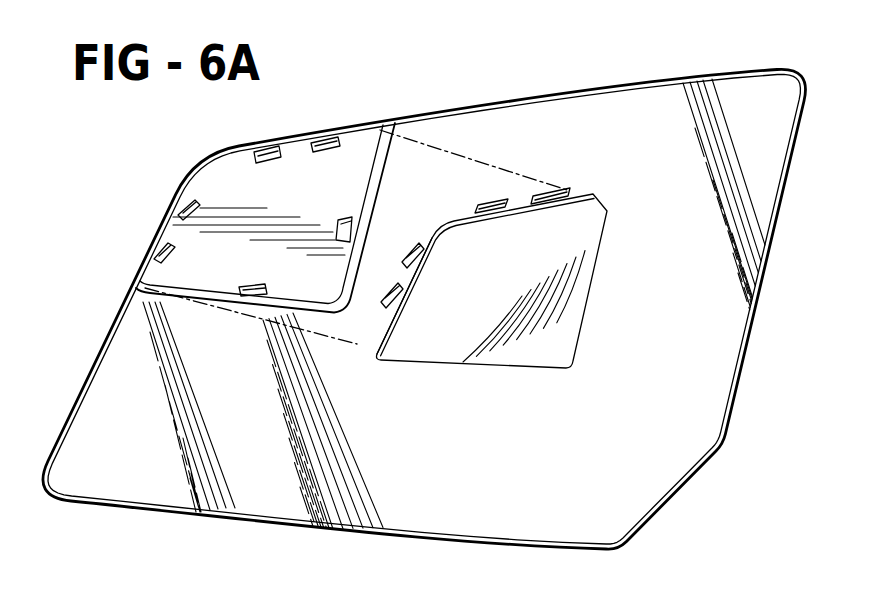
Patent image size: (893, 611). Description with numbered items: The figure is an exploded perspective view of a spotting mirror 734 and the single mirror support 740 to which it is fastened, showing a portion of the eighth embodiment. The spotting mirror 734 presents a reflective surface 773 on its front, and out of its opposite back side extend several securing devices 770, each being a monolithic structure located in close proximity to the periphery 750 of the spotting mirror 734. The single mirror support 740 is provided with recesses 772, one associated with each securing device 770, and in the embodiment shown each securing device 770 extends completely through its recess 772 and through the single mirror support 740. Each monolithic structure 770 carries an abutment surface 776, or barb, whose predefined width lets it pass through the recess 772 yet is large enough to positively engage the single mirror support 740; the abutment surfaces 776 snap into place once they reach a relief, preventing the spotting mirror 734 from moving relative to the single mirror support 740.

The single mirror support 740 is at (88, 331).
The recess 772 is at (320, 150).
The securing device 770 is at (566, 192).
The abutment surface 776 is at (500, 213).
The reflective surface 773 is at (497, 301).
The spotting mirror 734 is at (513, 368).
The periphery 750 is at (378, 337).